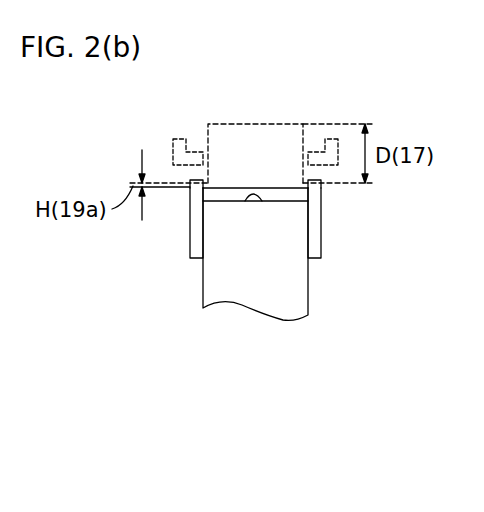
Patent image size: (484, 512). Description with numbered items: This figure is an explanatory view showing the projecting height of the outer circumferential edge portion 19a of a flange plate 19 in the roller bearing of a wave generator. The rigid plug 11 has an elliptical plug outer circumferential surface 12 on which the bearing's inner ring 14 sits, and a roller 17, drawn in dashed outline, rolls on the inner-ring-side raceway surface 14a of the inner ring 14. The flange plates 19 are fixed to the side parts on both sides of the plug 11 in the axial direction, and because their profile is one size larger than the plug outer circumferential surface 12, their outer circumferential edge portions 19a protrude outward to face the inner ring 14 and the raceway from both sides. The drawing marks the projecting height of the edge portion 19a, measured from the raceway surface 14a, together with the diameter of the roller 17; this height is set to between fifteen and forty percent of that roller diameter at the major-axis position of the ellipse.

The plug 11 is at (309, 284).
The plug outer circumferential surface 12 is at (245, 201).
The inner ring 14 is at (280, 193).
The inner-ring-side raceway surface 14a is at (273, 185).
The roller 17 is at (238, 125).
The flange plate 19 is at (190, 243).
The outer circumferential edge portion 19a is at (190, 185).